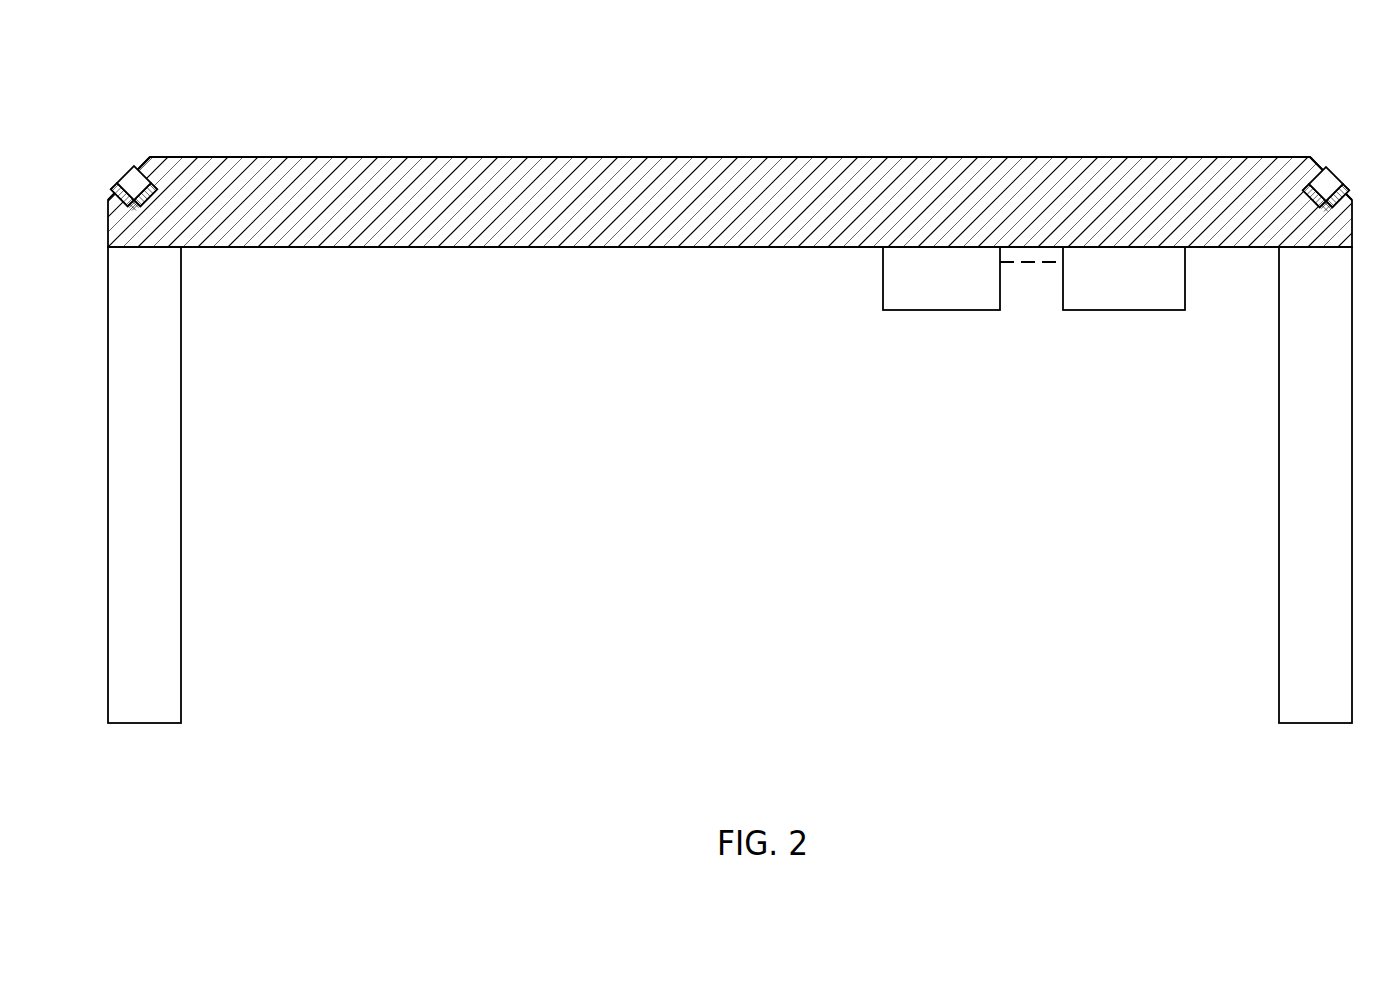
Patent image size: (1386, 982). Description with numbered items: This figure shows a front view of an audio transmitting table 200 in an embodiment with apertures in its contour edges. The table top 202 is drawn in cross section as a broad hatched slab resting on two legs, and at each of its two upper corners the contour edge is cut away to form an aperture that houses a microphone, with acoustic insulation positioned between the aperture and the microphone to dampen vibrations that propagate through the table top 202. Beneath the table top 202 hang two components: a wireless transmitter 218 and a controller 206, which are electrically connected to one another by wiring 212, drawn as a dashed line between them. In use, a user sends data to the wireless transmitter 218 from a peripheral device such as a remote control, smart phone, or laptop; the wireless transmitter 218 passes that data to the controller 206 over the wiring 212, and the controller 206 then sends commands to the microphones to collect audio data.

The audio transmitting table 200 is at (702, 367).
The table top 202 is at (707, 217).
The controller 206 is at (1136, 292).
The wiring 212 is at (1031, 266).
The wireless transmitter 218 is at (960, 292).